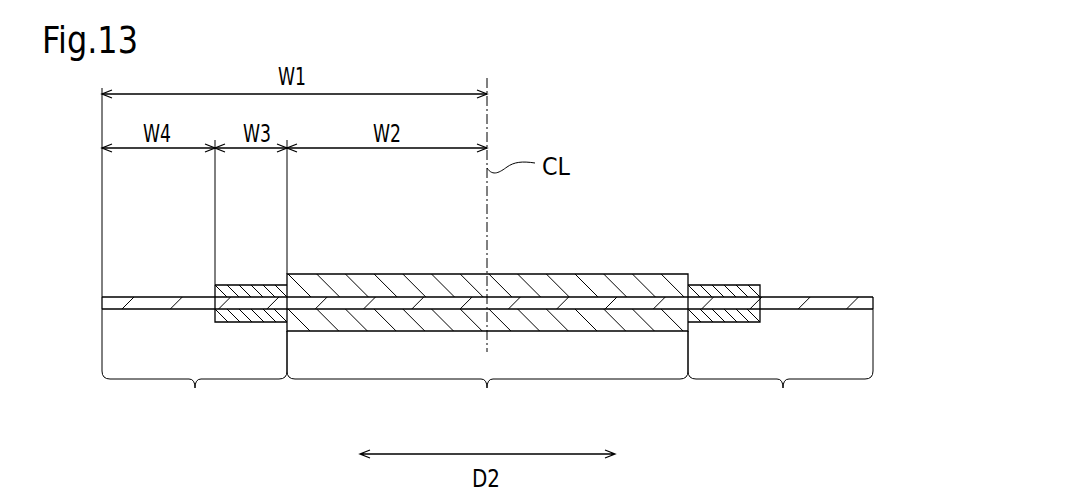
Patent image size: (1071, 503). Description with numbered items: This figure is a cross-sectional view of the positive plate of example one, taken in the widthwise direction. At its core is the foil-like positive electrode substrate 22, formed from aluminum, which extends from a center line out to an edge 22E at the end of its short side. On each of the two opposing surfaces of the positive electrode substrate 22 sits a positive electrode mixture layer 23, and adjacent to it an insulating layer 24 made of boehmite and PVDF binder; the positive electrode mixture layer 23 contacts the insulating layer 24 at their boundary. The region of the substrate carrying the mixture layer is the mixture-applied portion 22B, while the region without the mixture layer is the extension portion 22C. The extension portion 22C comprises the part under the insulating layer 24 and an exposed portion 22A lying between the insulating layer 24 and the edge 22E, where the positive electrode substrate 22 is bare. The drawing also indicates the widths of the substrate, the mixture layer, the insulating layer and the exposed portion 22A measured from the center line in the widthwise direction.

The positive electrode substrate 22 is at (352, 297).
The exposed portion 22A is at (153, 297).
The mixture-applied portion 22B is at (487, 378).
The extension portion 22C is at (487, 367).
The edge 22E is at (101, 303).
The positive electrode mixture layer 23 is at (612, 318).
The insulating layer 24 is at (262, 310).